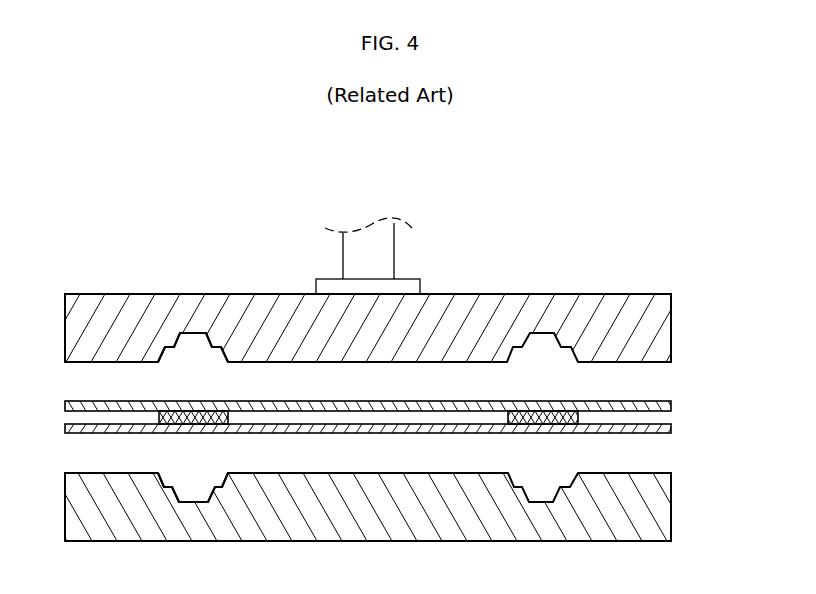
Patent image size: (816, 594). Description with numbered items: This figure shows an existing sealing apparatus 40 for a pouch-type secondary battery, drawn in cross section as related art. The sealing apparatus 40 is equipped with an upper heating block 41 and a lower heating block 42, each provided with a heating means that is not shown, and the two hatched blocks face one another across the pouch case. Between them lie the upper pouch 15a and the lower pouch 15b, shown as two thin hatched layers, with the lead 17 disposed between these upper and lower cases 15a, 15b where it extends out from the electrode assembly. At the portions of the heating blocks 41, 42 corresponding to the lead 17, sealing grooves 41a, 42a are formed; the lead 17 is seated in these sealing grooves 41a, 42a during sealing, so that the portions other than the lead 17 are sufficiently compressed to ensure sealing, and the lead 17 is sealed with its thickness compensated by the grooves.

The sealing apparatus 40 is at (640, 262).
The upper heating block 41 is at (663, 329).
The sealing groove 41a is at (191, 356).
The lower heating block 42 is at (665, 503).
The sealing groove 42a is at (193, 481).
The upper pouch 15a is at (667, 406).
The lower pouch 15b is at (667, 430).
The lead 17 is at (220, 411).